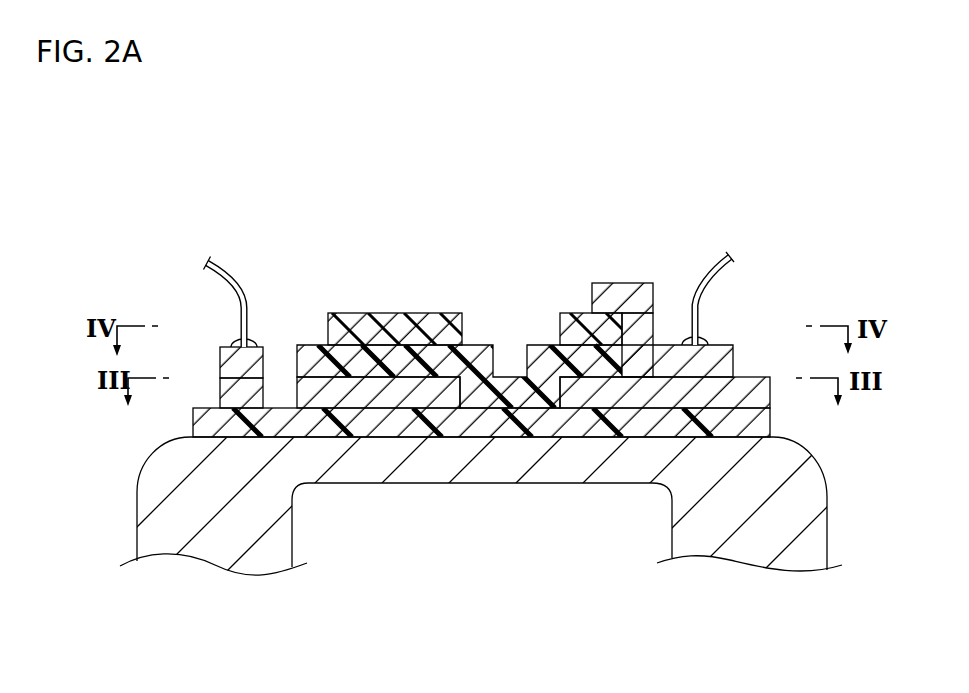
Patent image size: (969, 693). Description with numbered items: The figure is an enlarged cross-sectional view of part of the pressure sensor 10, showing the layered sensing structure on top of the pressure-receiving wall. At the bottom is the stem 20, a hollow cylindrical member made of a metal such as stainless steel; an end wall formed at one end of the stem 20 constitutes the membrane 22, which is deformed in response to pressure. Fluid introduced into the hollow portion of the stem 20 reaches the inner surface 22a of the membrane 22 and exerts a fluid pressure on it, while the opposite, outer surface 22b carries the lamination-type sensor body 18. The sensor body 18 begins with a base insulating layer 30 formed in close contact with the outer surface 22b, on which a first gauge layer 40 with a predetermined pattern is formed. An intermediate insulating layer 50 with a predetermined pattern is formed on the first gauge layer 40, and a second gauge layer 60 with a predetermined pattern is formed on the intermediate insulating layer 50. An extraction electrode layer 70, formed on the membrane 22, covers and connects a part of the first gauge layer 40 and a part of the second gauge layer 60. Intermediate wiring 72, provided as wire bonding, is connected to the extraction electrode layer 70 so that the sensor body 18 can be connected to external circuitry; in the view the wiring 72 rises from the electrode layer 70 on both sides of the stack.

The pressure sensor 10 is at (448, 236).
The lamination-type sensor body 18 is at (474, 338).
The stem 20 is at (729, 575).
The membrane 22 is at (365, 465).
The inner surface of the membrane 22a is at (552, 485).
The outer surface of the membrane 22b is at (484, 436).
The base insulating layer 30 is at (283, 423).
The first gauge layer 40 is at (398, 385).
The intermediate insulating layer 50 is at (540, 342).
The second gauge layer 60 is at (357, 328).
The extraction electrode layer 70 is at (235, 360).
The intermediate wiring 72 is at (238, 275).